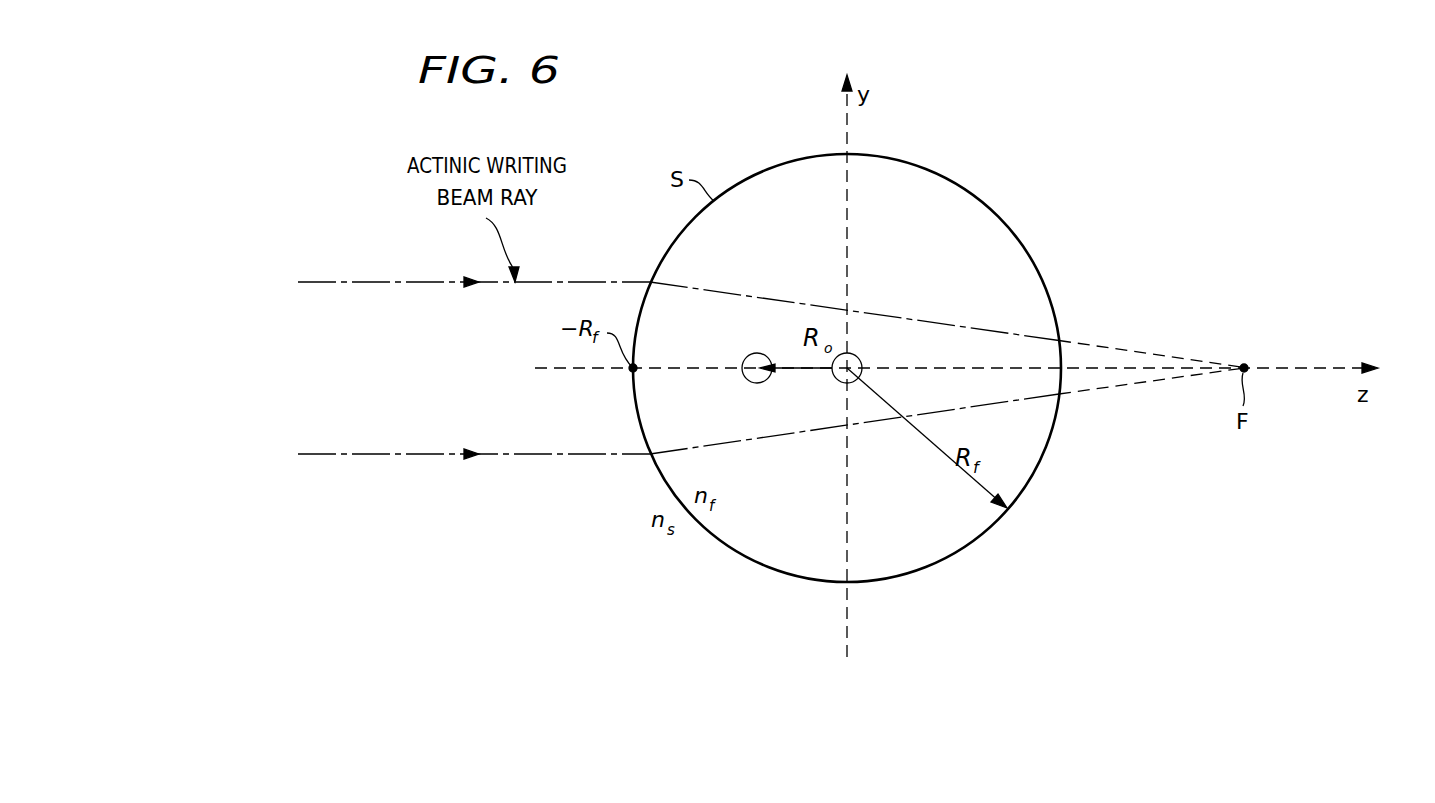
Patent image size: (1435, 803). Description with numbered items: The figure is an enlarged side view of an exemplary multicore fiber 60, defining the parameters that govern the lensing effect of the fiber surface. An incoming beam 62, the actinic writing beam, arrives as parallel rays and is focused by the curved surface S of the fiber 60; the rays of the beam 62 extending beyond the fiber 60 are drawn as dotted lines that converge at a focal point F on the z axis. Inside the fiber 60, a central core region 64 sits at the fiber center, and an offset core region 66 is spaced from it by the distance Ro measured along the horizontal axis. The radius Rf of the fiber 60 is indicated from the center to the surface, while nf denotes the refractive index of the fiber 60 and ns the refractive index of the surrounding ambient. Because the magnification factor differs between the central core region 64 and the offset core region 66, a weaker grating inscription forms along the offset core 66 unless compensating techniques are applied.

The multicore fiber 60 is at (794, 557).
The incoming beam 62 is at (295, 268).
The central core region 64 is at (860, 361).
The offset core region 66 is at (745, 358).